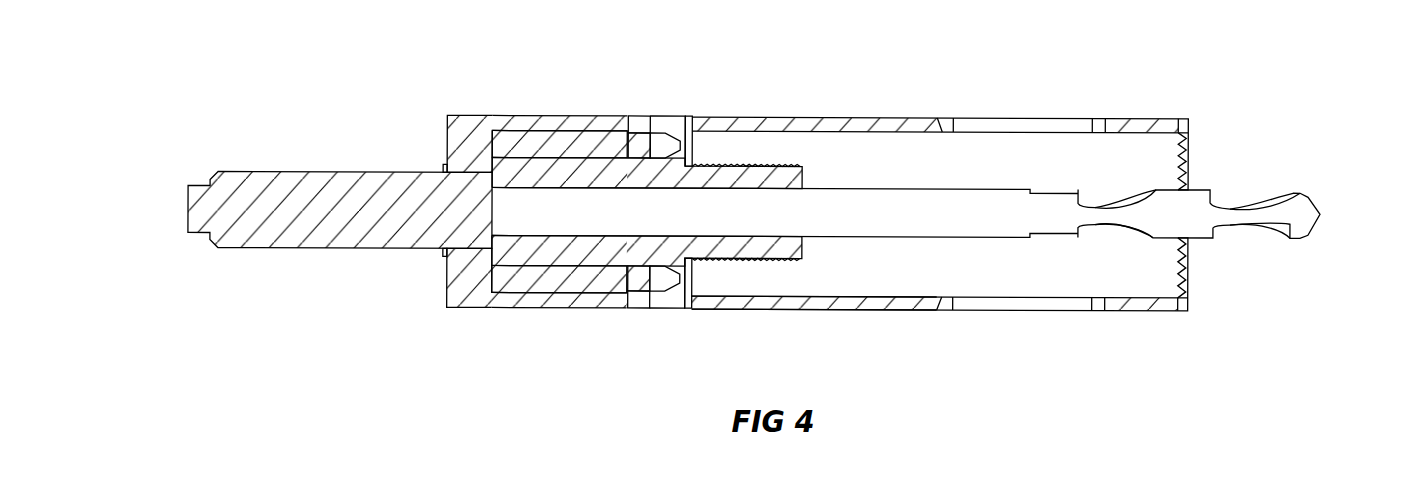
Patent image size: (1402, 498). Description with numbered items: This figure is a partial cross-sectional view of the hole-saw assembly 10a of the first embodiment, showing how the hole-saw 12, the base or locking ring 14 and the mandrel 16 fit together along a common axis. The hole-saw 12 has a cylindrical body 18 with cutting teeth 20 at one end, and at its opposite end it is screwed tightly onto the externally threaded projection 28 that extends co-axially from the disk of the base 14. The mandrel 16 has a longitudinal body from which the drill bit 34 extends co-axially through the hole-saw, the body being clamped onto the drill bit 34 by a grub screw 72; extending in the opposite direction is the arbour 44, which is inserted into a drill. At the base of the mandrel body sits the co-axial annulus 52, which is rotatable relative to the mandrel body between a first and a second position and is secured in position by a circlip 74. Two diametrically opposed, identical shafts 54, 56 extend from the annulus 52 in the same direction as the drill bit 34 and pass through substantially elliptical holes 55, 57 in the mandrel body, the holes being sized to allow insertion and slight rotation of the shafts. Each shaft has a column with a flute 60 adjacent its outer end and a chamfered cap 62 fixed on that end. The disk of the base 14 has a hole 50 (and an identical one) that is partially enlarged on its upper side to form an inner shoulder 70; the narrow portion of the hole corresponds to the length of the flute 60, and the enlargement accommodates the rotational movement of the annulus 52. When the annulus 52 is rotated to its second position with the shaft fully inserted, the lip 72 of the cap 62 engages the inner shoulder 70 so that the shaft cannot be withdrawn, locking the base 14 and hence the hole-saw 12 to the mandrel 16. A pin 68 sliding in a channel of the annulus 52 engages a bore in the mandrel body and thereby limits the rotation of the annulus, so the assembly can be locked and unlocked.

The hole-saw assembly 10a is at (1064, 108).
The hole-saw 12 is at (942, 313).
The base or locking ring 14 is at (658, 309).
The mandrel 16 is at (538, 309).
The cylindrical body 18 is at (855, 311).
The cutting teeth 20 is at (1188, 304).
The threaded projection 28 is at (805, 164).
The drill bit 34 is at (1232, 240).
The arbour 44 is at (290, 232).
The hole 50 is at (681, 302).
The co-axial annulus 52 is at (456, 299).
The shaft 54 is at (540, 130).
The elliptical hole 55 is at (495, 127).
The shaft 56 is at (592, 291).
The elliptical hole 57 is at (512, 300).
The flute 60 is at (628, 124).
The chamfered cap 62 is at (690, 130).
The pin 68 is at (588, 130).
The inner shoulder 70 is at (660, 126).
The lip 72 is at (648, 126).
The circlip 74 is at (445, 166).